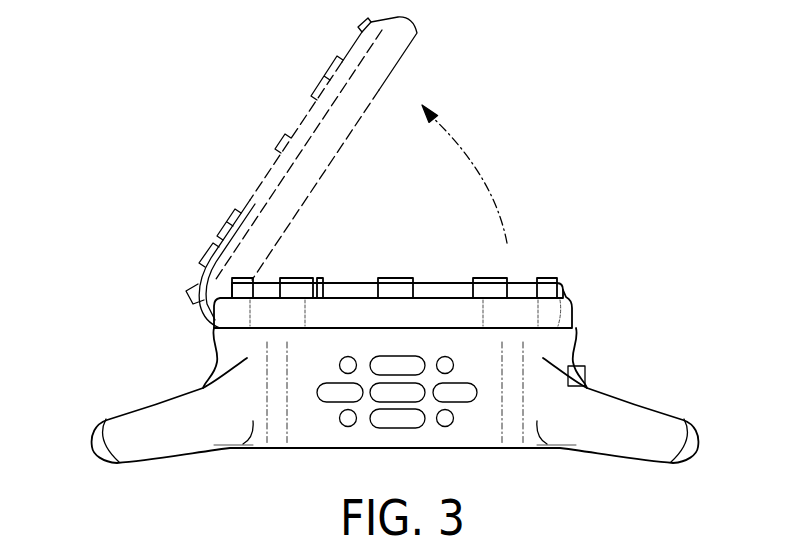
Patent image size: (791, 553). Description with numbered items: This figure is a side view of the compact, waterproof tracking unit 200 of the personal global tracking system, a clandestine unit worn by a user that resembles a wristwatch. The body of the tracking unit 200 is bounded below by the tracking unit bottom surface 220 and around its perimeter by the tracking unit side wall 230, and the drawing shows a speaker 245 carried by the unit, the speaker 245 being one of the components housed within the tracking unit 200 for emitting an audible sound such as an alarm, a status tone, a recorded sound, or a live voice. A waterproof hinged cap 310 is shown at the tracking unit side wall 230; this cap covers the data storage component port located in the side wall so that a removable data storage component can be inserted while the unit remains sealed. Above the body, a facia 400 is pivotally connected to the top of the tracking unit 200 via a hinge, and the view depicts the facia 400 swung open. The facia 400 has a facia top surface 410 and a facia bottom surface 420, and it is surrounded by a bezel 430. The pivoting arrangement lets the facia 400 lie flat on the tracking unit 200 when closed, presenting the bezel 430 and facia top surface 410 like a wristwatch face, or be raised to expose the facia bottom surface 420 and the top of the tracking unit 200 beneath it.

The tracking unit 200 is at (410, 385).
The tracking unit bottom surface 220 is at (323, 450).
The tracking unit side wall 230 is at (235, 347).
The speaker 245 is at (460, 392).
The waterproof hinged cap 310 is at (582, 338).
The facia 400 is at (359, 169).
The facia top surface 410 is at (245, 200).
The facia bottom surface 420 is at (382, 86).
The bezel 430 is at (211, 265).